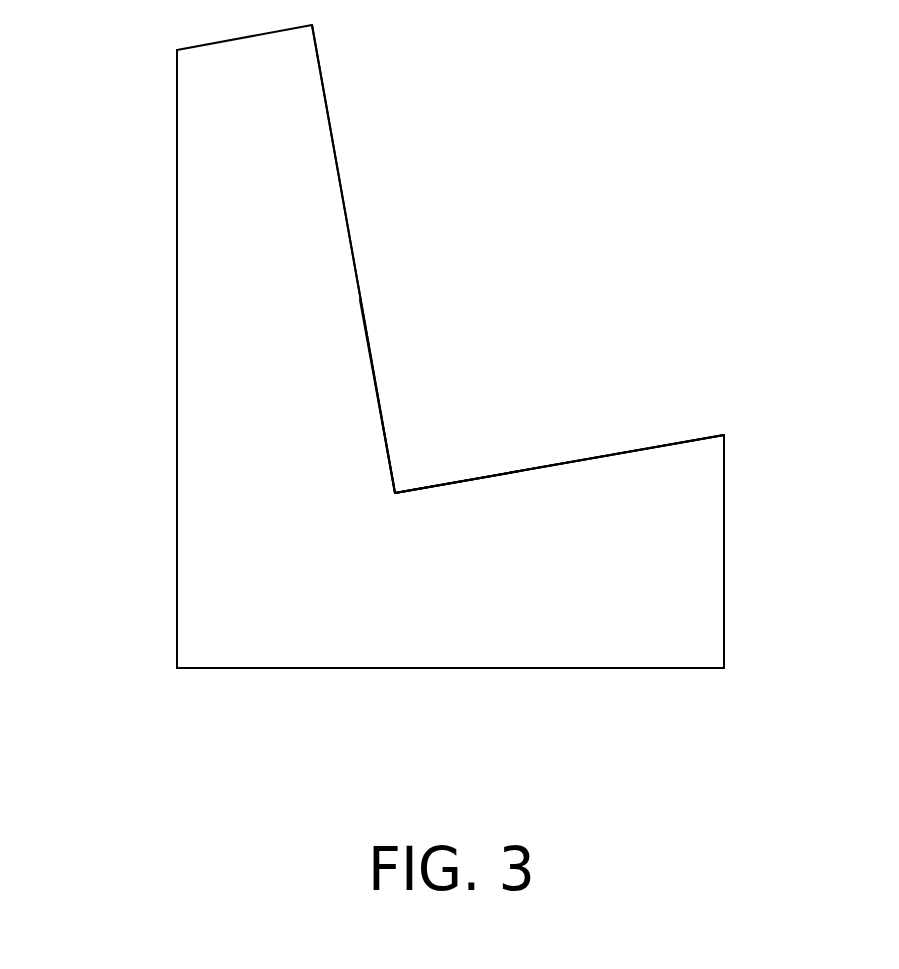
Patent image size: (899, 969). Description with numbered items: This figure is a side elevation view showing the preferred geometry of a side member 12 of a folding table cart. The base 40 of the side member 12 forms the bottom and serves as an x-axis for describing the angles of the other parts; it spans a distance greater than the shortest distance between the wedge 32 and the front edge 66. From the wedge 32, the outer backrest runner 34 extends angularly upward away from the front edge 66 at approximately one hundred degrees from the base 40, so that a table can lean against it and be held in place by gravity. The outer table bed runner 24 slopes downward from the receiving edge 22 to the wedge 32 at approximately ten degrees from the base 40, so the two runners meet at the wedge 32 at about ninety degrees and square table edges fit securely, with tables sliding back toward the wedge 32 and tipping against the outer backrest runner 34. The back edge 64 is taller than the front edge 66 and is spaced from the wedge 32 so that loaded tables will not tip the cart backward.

The side member 12 is at (480, 405).
The receiving edge 22 is at (617, 509).
The outer table bed runner 24 is at (559, 384).
The wedge 32 is at (457, 396).
The outer backrest runner 34 is at (408, 259).
The base 40 is at (442, 727).
The back edge 64 is at (102, 359).
The front edge 66 is at (796, 551).